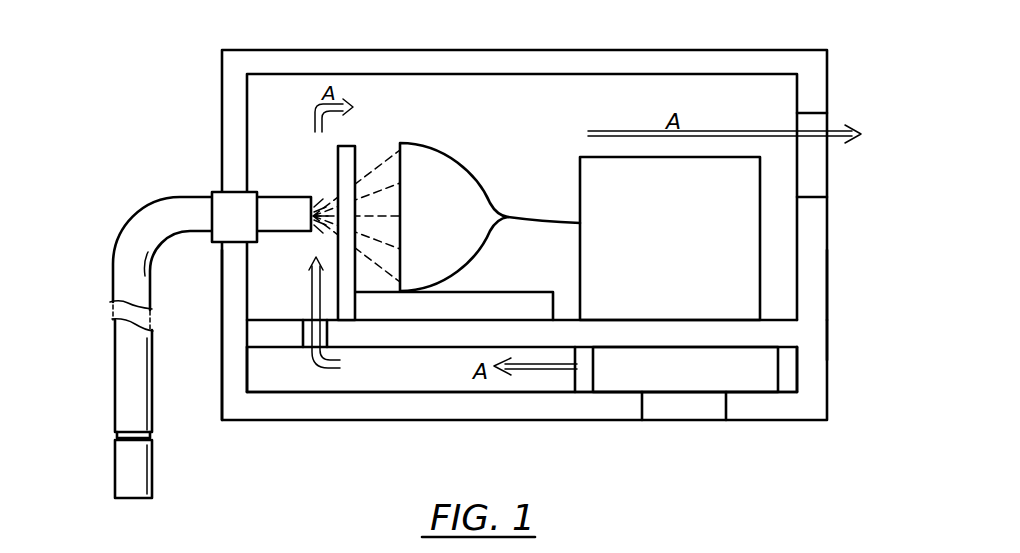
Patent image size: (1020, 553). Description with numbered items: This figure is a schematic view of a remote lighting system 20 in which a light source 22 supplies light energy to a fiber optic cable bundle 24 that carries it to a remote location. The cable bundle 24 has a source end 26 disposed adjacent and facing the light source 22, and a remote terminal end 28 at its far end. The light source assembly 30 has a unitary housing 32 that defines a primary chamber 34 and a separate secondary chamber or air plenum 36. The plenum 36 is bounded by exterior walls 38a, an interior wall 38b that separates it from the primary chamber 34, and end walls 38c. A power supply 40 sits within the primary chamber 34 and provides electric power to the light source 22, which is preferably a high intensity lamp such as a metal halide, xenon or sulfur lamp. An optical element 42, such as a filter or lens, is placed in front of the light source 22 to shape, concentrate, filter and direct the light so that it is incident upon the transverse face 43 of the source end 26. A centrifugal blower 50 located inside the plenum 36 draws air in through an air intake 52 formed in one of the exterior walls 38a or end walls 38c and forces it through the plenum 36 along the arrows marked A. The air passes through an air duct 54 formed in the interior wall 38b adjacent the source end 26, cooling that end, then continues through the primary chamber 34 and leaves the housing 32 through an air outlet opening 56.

The remote lighting system 20 is at (853, 66).
The light source 22 is at (456, 179).
The fiber optic cable bundle 24 is at (118, 365).
The source end 26 is at (289, 228).
The remote terminal end 28 is at (120, 458).
The light source assembly 30 is at (848, 320).
The housing 32 is at (823, 283).
The primary chamber 34 is at (565, 98).
The air plenum 36 is at (303, 366).
The exterior walls 38a is at (434, 413).
The interior wall 38b is at (427, 340).
The end walls 38c is at (231, 373).
The power supply 40 is at (695, 234).
The optical element 42 is at (348, 146).
The transverse face 43 is at (321, 198).
The centrifugal blower 50 is at (757, 381).
The air intake 52 is at (694, 414).
The air duct 54 is at (324, 333).
The air outlet opening 56 is at (822, 180).